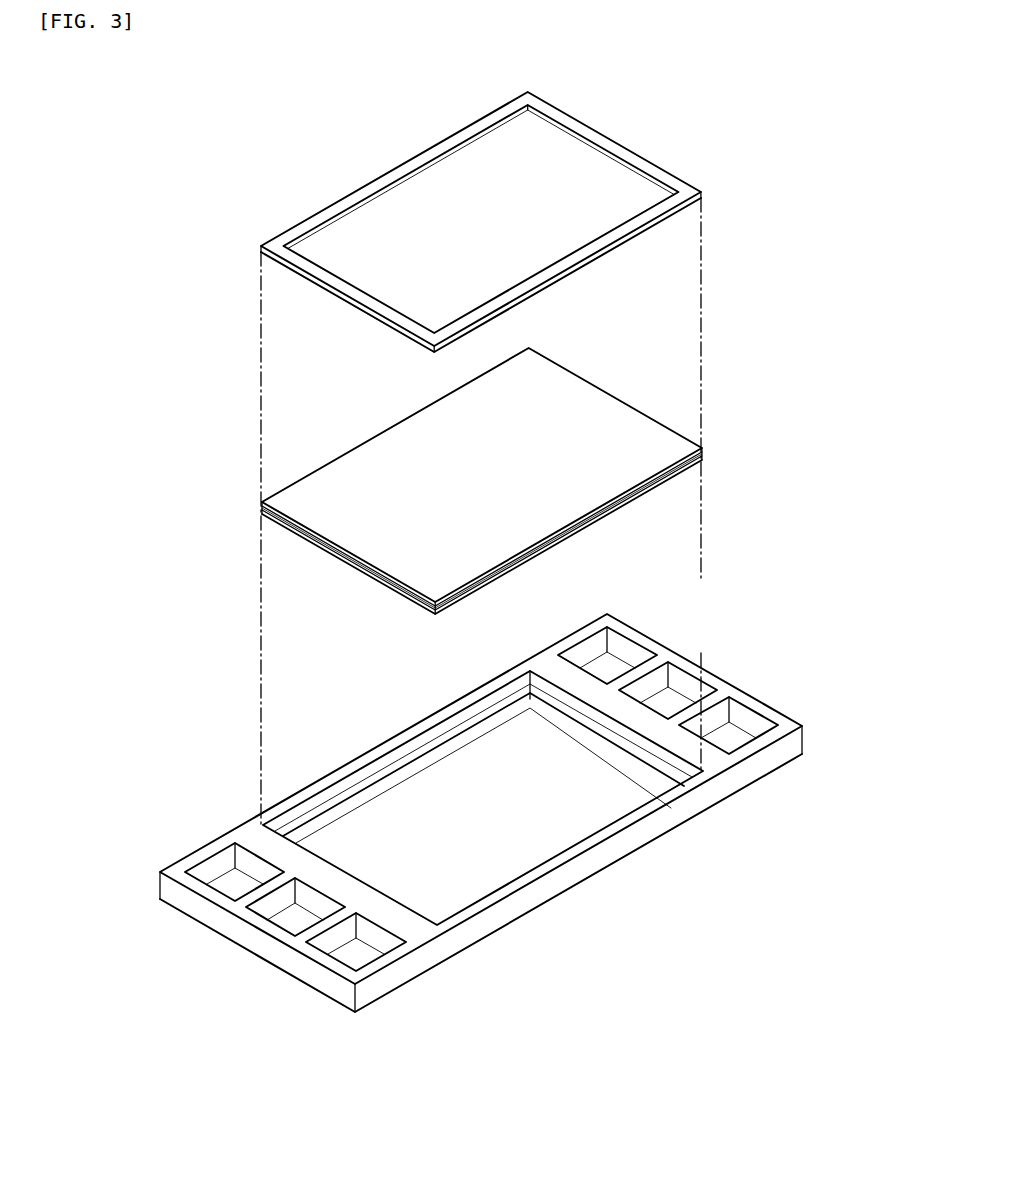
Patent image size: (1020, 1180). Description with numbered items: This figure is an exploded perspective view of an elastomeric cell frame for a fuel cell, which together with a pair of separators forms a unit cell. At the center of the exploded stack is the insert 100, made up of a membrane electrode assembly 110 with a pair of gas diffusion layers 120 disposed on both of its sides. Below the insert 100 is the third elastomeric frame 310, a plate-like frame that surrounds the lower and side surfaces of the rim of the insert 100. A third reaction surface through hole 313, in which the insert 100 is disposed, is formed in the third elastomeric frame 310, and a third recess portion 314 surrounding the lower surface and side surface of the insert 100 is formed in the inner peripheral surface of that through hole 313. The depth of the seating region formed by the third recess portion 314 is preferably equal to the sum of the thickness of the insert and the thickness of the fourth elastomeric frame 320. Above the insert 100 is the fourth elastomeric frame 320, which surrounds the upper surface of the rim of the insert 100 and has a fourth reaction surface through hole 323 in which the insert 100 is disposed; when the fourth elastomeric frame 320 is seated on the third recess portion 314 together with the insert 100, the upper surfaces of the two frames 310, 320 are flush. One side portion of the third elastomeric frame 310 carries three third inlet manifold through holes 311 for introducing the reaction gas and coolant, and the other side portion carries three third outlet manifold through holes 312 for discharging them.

The insert 100 is at (383, 481).
The membrane electrode assembly 110 is at (262, 510).
The gas diffusion layers 120 is at (262, 502).
The third elastomeric frame 310 is at (460, 785).
The third inlet manifold through holes 311 is at (299, 918).
The third outlet manifold through holes 312 is at (676, 696).
The third reaction surface through hole 313 is at (431, 784).
The third recess portion 314 is at (358, 795).
The fourth elastomeric frame 320 is at (481, 217).
The fourth reaction surface through hole 323 is at (436, 208).